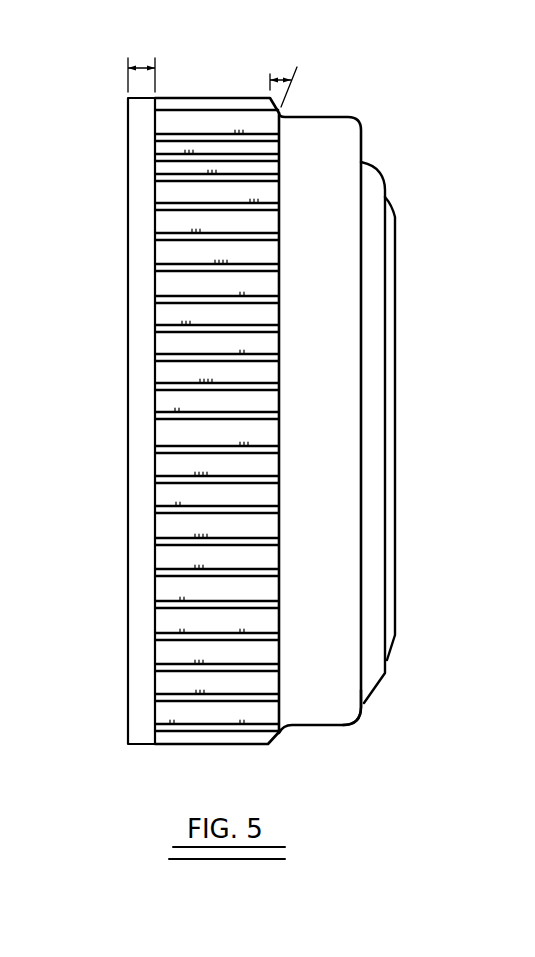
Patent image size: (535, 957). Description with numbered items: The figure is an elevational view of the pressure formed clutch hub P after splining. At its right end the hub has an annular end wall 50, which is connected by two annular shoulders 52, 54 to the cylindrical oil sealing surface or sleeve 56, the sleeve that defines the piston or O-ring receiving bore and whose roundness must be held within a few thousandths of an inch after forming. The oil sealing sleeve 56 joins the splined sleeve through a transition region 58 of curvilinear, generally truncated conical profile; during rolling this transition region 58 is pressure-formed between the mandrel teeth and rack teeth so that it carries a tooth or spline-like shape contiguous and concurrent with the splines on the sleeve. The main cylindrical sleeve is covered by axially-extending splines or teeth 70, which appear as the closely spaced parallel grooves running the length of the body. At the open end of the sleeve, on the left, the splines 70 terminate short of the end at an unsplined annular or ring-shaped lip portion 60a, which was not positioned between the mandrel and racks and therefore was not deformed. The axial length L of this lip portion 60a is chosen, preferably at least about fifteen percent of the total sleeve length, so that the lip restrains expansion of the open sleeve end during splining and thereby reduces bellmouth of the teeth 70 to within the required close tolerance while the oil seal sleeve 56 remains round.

The annular end wall 50 is at (397, 587).
The annular shoulder 52 is at (388, 667).
The annular shoulder 54 is at (367, 706).
The oil sealing surface or sleeve 56 is at (328, 116).
The transition region 58 is at (297, 67).
The ring-shaped lip portion 60a is at (137, 723).
The splines or teeth 70 is at (194, 86).
The length of the ring-shaped lip portion L is at (136, 58).
The pressure formed clutch hub P is at (318, 757).